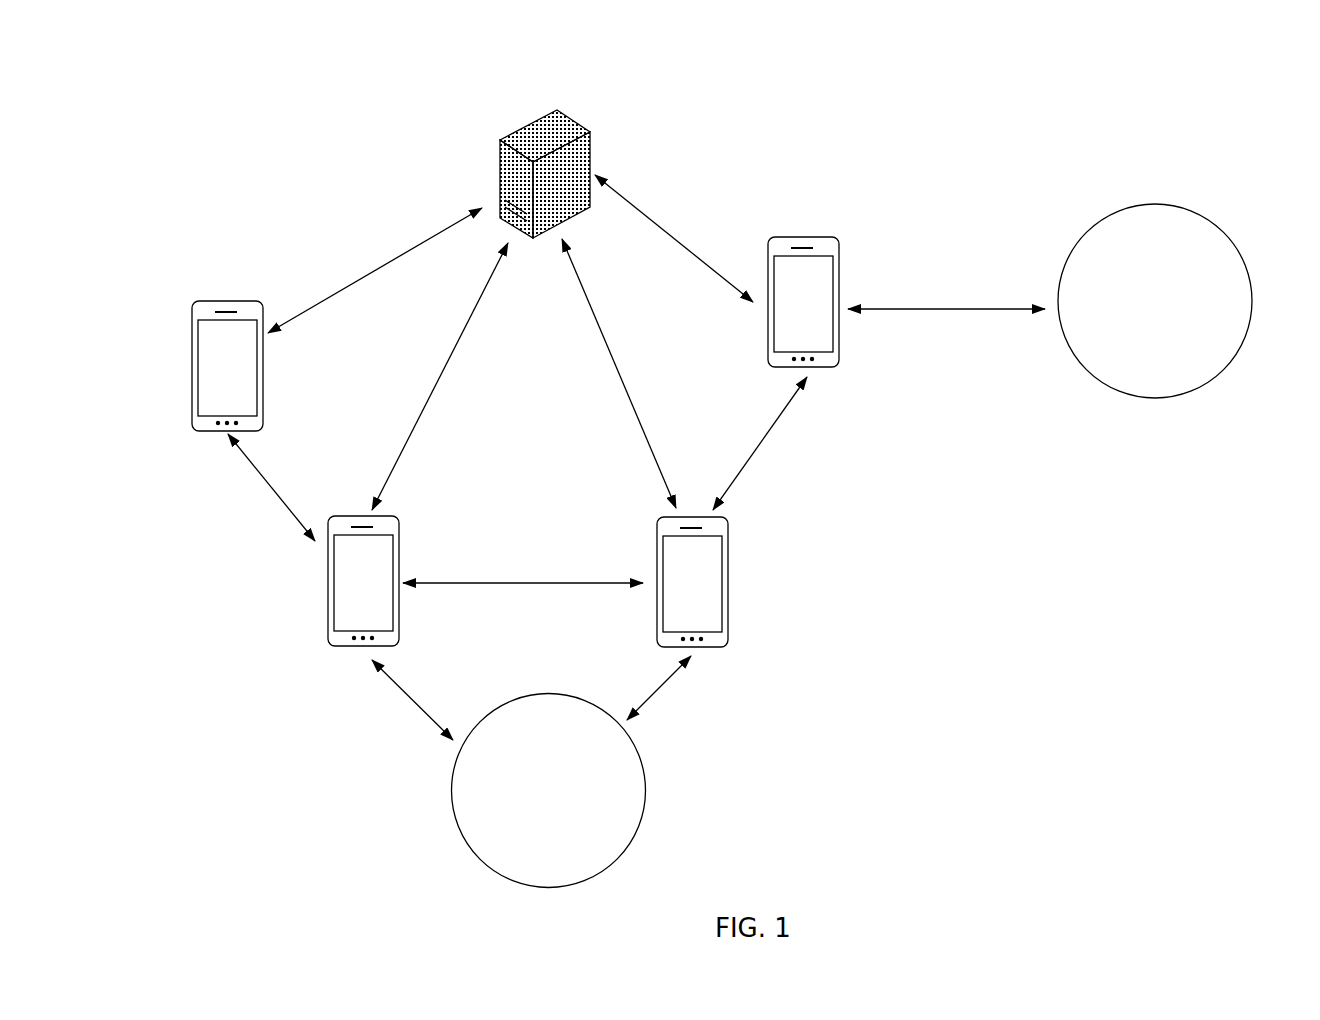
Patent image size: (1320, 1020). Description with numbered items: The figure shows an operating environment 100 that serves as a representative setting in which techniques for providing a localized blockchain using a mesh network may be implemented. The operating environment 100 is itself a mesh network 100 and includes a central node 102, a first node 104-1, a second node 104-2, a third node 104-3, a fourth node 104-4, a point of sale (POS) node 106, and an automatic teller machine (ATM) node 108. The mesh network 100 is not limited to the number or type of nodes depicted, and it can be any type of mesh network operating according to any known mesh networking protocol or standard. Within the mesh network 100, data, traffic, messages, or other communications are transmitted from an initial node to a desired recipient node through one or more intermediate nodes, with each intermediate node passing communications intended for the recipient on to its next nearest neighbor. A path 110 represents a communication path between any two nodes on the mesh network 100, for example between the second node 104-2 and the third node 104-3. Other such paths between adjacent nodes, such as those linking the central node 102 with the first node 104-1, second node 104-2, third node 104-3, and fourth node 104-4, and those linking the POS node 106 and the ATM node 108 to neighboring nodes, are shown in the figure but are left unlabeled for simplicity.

The operating environment / mesh network 100 is at (306, 41).
The central node 102 is at (576, 127).
The first node 104-1 is at (222, 302).
The second node 104-2 is at (340, 647).
The third node 104-3 is at (712, 647).
The fourth node 104-4 is at (818, 238).
The point of sale (POS) node 106 is at (527, 817).
The automatic teller machine (ATM) node 108 is at (1134, 327).
The path 110 is at (468, 583).